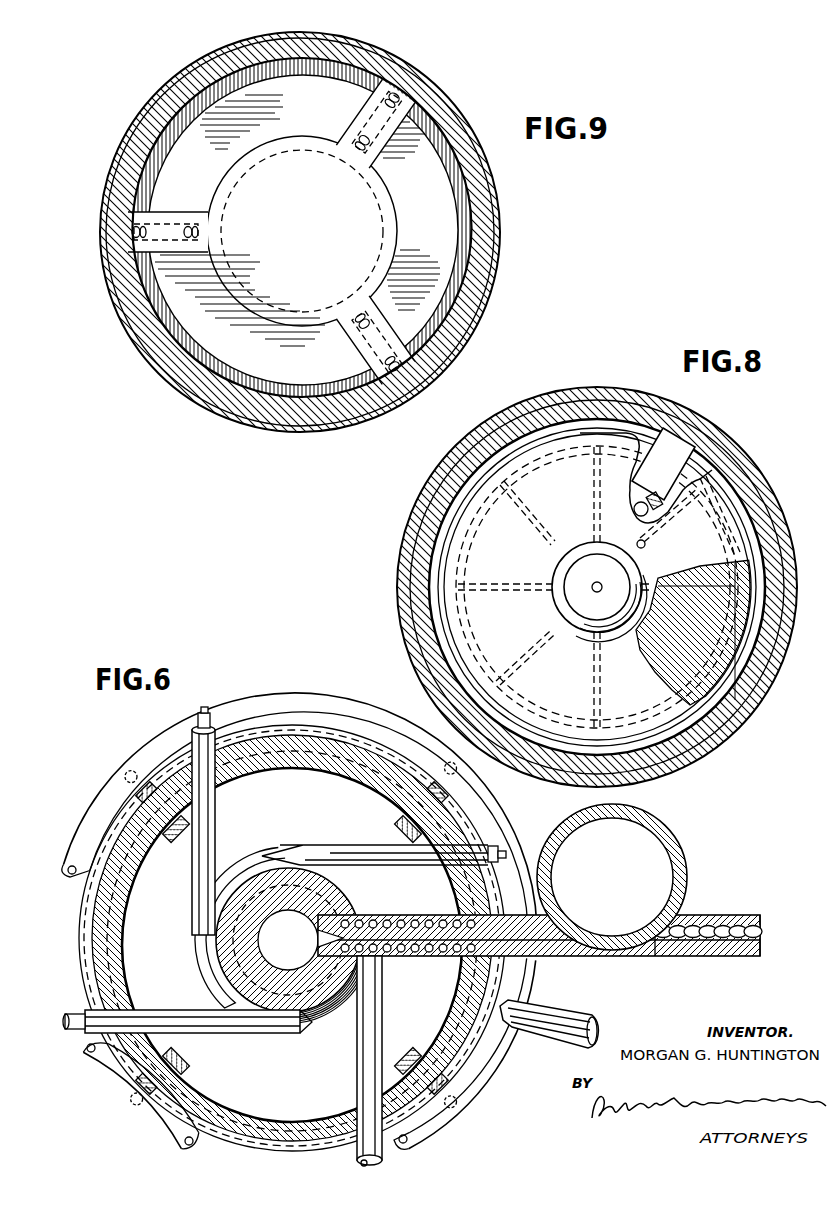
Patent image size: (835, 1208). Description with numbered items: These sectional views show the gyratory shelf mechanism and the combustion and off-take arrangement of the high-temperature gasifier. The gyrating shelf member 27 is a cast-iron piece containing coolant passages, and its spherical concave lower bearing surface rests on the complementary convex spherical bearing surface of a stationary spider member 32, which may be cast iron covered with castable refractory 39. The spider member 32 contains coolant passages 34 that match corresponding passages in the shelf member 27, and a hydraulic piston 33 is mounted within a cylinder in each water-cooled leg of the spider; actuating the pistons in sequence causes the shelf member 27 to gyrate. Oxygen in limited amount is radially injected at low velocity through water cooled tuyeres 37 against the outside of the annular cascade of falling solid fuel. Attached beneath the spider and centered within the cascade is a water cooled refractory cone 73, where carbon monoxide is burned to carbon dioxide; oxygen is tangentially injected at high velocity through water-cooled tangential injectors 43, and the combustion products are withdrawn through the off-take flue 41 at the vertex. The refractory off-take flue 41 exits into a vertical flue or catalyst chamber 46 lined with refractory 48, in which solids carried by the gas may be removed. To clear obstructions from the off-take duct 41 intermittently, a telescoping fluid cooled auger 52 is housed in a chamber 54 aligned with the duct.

In FIG. 9, the gyrating shelf member 27 is at (320, 123).
In FIG. 8, the gyrating shelf member 27 is at (576, 679).
In FIG. 9, the stationary spider member 32 is at (191, 213).
In FIG. 8, the stationary spider member 32 is at (684, 485).
In FIG. 9, the hydraulic piston 33 is at (381, 146).
In FIG. 8, the hydraulic piston 33 is at (657, 494).
In FIG. 8, the coolant passages 34 is at (688, 580).
In FIG. 6, the water cooled tuyeres 37 is at (405, 1045).
In FIG. 9, the castable refractory 39 is at (390, 240).
In FIG. 6, the off-take flue 41 is at (420, 915).
In FIG. 6, the tangential injectors 43 is at (353, 848).
In FIG. 6, the vertical flue or catalyst chamber 46 is at (623, 877).
In FIG. 6, the refractory 48 is at (587, 826).
In FIG. 6, the telescoping fluid cooled auger 52 is at (711, 917).
In FIG. 6, the chamber 54 is at (712, 915).
In FIG. 6, the water cooled refractory cone 73 is at (328, 1024).